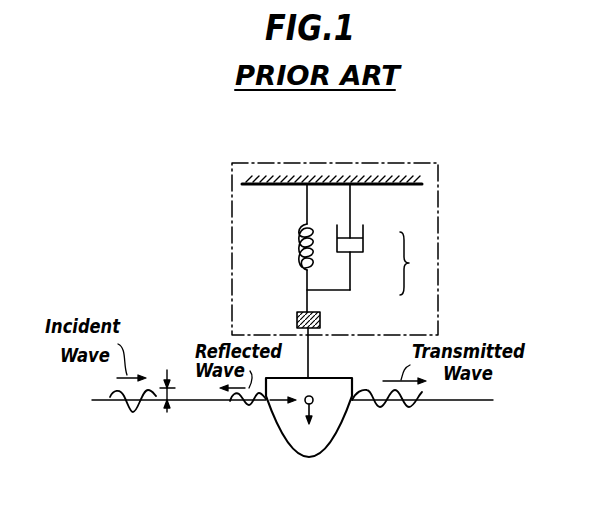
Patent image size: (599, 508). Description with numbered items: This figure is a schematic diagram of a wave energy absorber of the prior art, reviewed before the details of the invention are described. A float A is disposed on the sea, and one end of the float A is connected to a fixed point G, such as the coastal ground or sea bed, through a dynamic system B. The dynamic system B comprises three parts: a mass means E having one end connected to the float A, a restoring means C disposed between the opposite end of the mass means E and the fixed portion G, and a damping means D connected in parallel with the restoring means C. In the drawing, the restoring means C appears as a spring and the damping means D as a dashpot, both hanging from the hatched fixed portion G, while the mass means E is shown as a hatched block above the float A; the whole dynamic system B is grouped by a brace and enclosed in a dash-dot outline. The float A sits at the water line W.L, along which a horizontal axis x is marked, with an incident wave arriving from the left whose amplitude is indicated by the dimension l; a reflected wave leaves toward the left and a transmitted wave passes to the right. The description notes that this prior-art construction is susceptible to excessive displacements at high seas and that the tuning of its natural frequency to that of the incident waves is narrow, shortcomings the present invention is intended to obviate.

The float A is at (279, 431).
The dynamic system B is at (425, 277).
The restoring means C is at (311, 256).
The damping means D is at (363, 239).
The mass means E is at (320, 313).
The fixed point G is at (380, 185).
The water line W.L is at (293, 413).
The horizontal axis x is at (89, 406).
The incident wave amplitude l is at (171, 391).